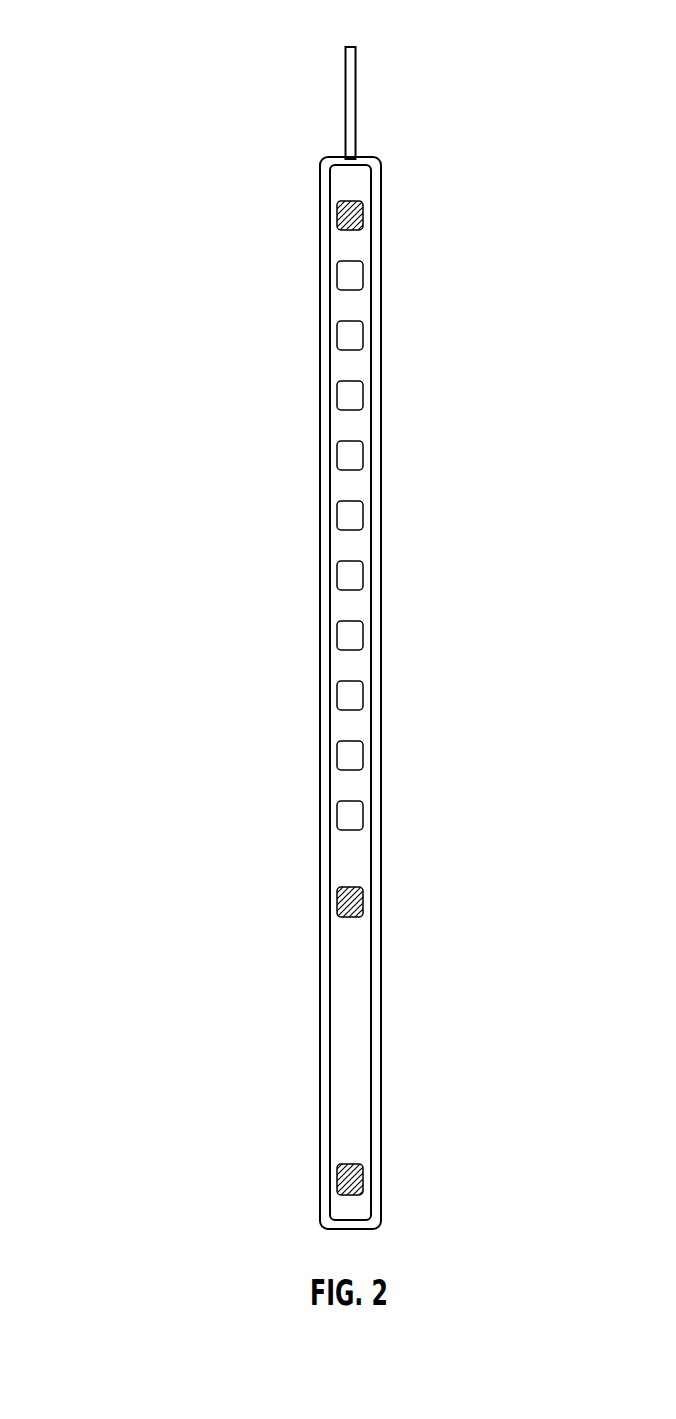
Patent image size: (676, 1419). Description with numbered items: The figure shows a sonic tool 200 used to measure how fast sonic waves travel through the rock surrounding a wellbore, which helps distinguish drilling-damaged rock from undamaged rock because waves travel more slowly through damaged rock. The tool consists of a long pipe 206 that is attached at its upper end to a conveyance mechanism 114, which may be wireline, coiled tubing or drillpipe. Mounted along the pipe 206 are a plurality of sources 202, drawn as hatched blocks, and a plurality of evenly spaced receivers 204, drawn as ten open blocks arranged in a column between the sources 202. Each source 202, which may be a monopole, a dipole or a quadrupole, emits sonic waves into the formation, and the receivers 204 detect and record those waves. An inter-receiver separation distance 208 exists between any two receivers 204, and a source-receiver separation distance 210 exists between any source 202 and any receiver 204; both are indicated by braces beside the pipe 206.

The sonic tool 200 is at (197, 28).
The conveyance mechanism 114 is at (356, 101).
The pipe 206 is at (360, 185).
The source 202 is at (336, 215).
The receiver 204 is at (333, 335).
The inter-receiver separation distance 208 is at (386, 457).
The source-receiver separation distance 210 is at (385, 1177).